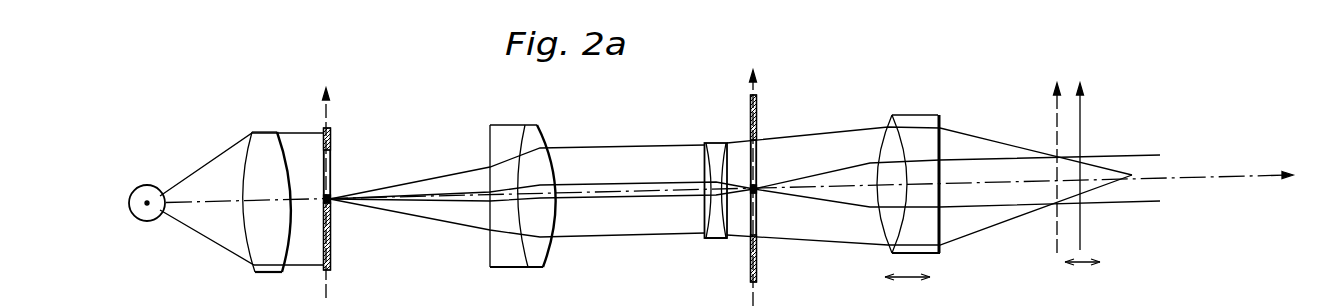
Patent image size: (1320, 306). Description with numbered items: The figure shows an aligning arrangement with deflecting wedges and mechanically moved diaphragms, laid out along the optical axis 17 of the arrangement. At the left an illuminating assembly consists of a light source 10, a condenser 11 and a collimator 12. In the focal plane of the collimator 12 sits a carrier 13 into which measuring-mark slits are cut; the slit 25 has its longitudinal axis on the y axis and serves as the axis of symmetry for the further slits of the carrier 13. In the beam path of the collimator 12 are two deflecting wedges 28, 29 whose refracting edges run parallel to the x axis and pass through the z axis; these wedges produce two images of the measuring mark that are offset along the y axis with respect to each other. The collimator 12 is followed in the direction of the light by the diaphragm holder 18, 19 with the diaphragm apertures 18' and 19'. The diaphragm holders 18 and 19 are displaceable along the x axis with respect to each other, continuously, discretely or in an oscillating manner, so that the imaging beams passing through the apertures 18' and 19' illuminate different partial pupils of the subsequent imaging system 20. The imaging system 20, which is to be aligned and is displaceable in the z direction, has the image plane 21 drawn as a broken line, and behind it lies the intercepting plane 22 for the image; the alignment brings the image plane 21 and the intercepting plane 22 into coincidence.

The light source 10 is at (147, 222).
The condenser 11 is at (259, 155).
The collimator 12 is at (508, 140).
The carrier 13 is at (332, 142).
The slit 25 is at (333, 173).
The deflecting wedge 28 is at (715, 155).
The deflecting wedge 29 is at (717, 239).
The diaphragm holder 18 is at (773, 173).
The diaphragm aperture 18' is at (781, 162).
The diaphragm holder 19 is at (778, 258).
The diaphragm aperture 19' is at (781, 214).
The imaging system 20 is at (905, 122).
The image plane 21 is at (1055, 113).
The intercepting plane 22 is at (1082, 112).
The optical axis 17 is at (1238, 178).